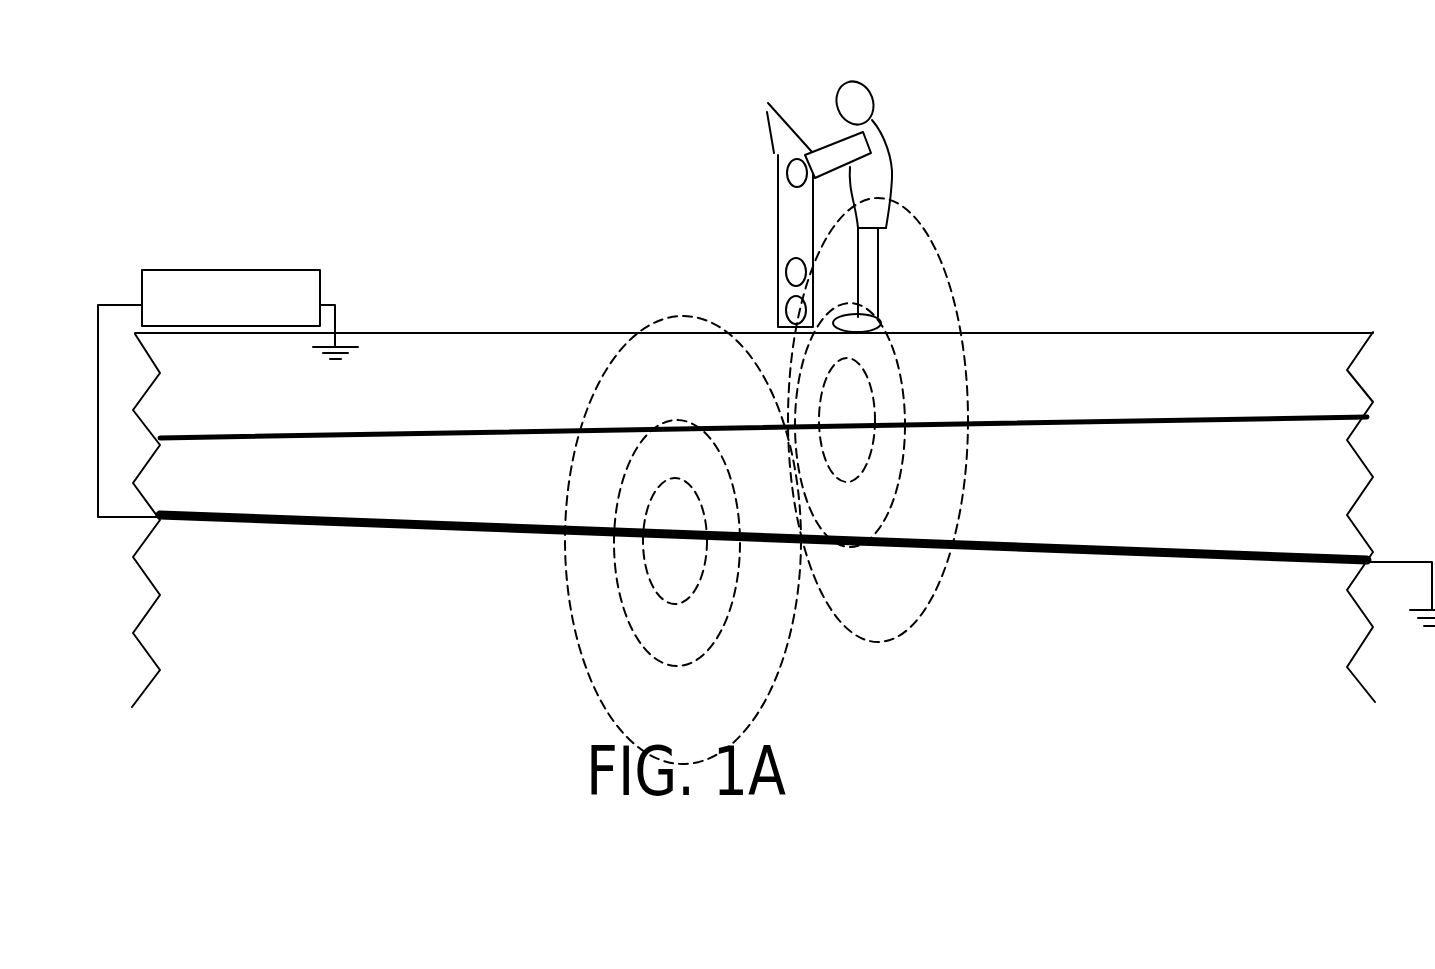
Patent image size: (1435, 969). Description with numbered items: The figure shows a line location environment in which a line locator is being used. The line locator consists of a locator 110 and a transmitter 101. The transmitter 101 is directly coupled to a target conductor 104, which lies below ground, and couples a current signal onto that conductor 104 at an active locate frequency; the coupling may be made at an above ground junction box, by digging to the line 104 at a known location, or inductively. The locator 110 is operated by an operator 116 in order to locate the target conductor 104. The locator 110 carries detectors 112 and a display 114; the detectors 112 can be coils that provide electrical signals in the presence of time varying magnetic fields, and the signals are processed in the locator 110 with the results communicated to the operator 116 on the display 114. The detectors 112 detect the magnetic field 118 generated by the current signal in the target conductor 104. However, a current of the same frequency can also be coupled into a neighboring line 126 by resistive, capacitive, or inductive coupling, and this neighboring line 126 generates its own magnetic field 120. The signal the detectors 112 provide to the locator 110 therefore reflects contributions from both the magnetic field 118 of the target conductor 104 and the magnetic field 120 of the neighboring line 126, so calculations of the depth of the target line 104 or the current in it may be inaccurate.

The transmitter 101 is at (183, 270).
The target conductor 104 is at (987, 540).
The neighboring line 126 is at (564, 426).
The locator 110 is at (777, 222).
The detectors 112 is at (787, 313).
The display 114 is at (802, 127).
The operator 116 is at (900, 155).
The magnetic field 118 is at (597, 568).
The magnetic field 120 is at (878, 565).